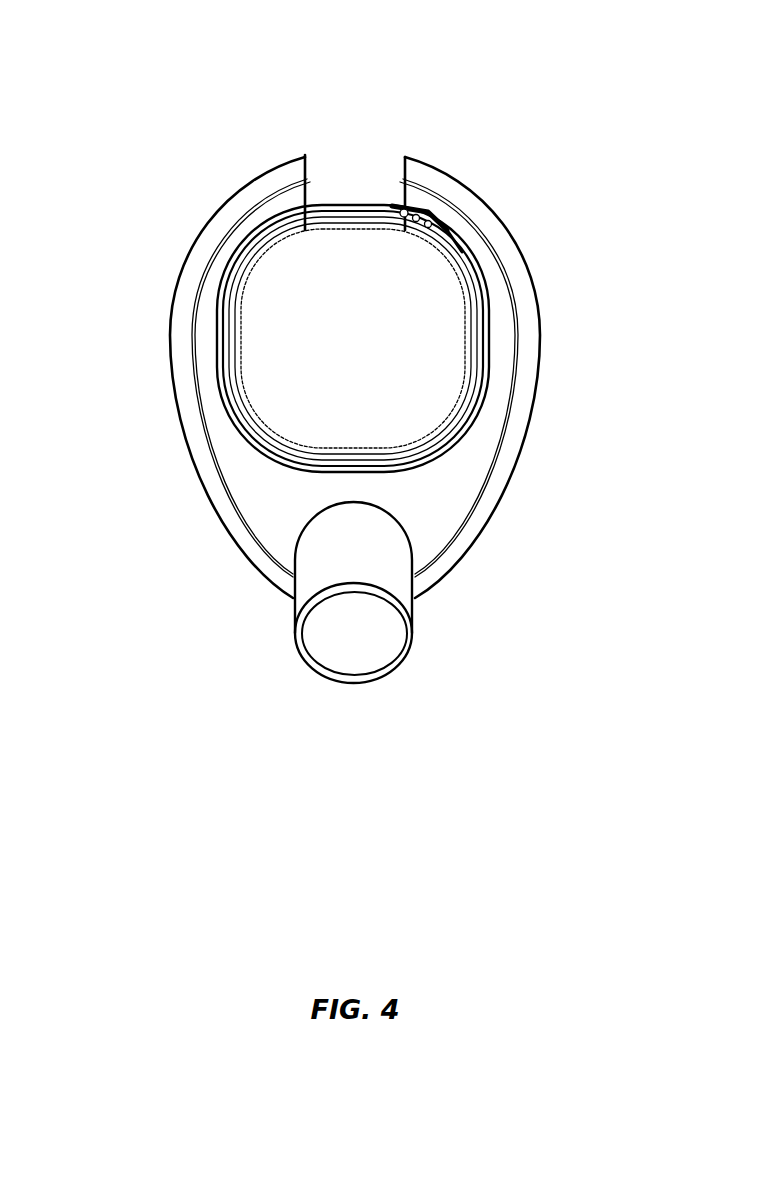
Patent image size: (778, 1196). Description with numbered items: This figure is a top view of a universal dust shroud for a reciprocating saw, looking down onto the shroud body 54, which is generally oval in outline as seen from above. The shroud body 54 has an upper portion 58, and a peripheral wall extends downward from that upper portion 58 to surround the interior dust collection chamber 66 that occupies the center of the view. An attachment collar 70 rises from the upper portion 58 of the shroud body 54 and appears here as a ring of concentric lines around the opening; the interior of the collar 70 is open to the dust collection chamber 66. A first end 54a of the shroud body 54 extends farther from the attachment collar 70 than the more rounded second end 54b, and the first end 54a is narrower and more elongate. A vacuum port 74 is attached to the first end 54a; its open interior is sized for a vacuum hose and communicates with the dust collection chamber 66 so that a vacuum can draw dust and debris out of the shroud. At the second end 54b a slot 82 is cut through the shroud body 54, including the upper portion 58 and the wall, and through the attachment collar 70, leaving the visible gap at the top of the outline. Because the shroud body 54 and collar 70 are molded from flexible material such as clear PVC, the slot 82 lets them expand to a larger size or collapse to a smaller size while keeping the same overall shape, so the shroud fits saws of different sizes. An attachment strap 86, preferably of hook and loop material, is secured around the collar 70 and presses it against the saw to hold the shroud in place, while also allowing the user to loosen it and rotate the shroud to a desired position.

The shroud body 54 is at (498, 488).
The first end 54a is at (416, 545).
The second end 54b is at (418, 212).
The upper portion 58 is at (270, 510).
The dust collection chamber 66 is at (415, 312).
The attachment collar 70 is at (237, 332).
The vacuum port 74 is at (333, 548).
The slot 82 is at (368, 163).
The attachment strap 86 is at (473, 353).